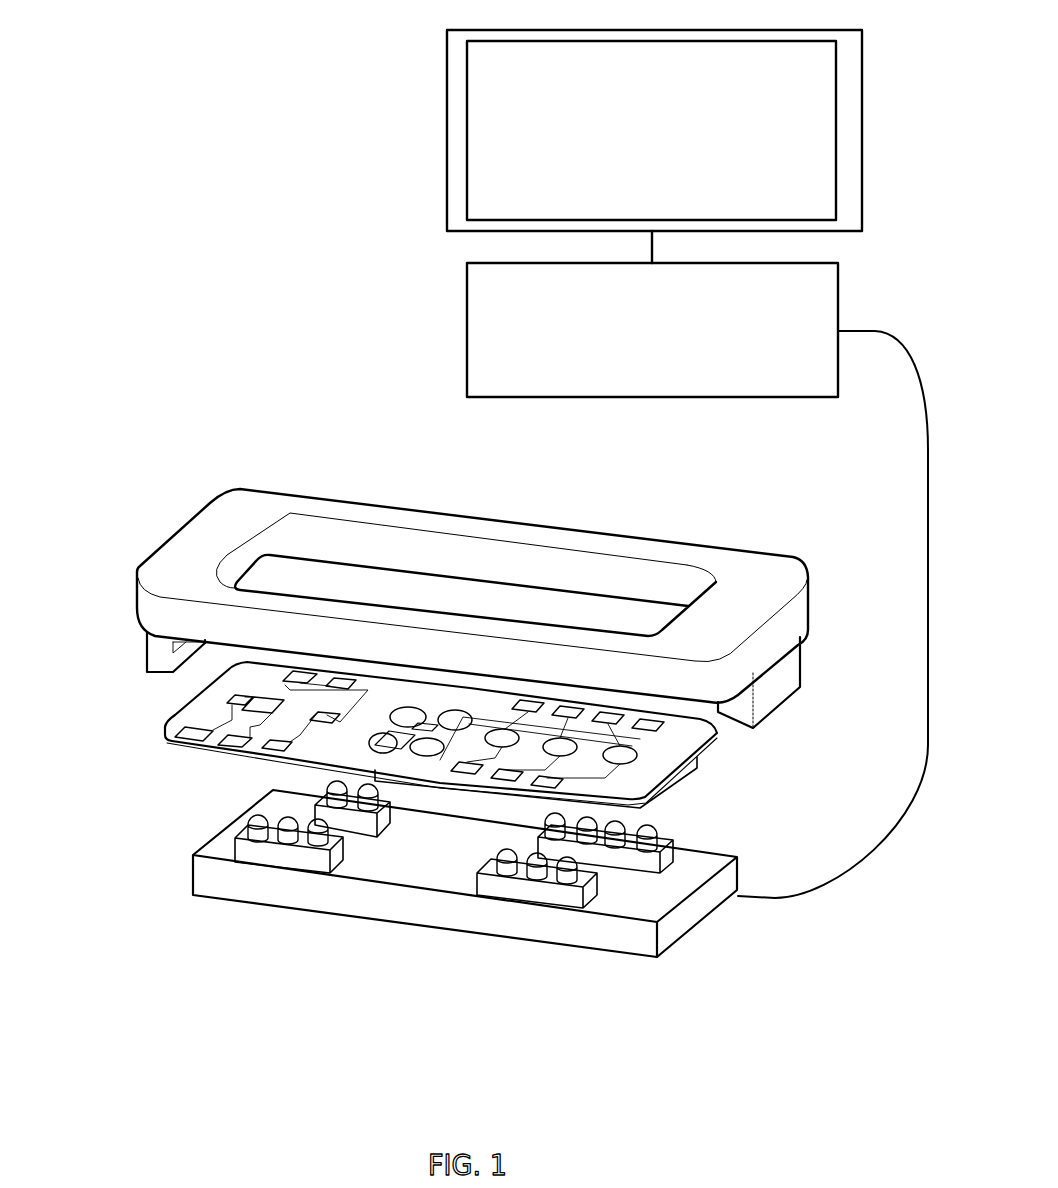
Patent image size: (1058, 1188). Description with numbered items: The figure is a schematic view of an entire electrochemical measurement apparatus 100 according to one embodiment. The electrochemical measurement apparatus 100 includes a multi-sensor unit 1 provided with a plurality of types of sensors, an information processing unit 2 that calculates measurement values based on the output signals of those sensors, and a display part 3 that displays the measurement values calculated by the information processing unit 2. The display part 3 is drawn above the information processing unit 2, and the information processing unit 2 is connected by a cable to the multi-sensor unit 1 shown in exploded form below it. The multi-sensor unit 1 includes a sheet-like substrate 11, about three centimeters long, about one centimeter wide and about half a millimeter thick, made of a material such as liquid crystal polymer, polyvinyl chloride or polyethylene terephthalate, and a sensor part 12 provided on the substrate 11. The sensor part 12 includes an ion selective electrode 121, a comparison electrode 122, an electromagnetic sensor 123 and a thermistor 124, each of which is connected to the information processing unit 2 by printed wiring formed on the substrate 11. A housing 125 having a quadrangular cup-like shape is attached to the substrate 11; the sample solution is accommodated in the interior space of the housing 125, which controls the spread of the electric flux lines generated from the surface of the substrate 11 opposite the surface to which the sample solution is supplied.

The electrochemical measurement apparatus 100 is at (190, 218).
The multi-sensor unit 1 is at (132, 503).
The information processing unit 2 is at (467, 327).
The display part 3 is at (447, 128).
The substrate 11 is at (706, 746).
The sensor part 12 is at (160, 735).
The ion selective electrode 121 is at (200, 708).
The comparison electrode 122 is at (597, 777).
The electromagnetic sensor 123 is at (350, 750).
The thermistor 124 is at (300, 740).
The housing 125 is at (665, 782).